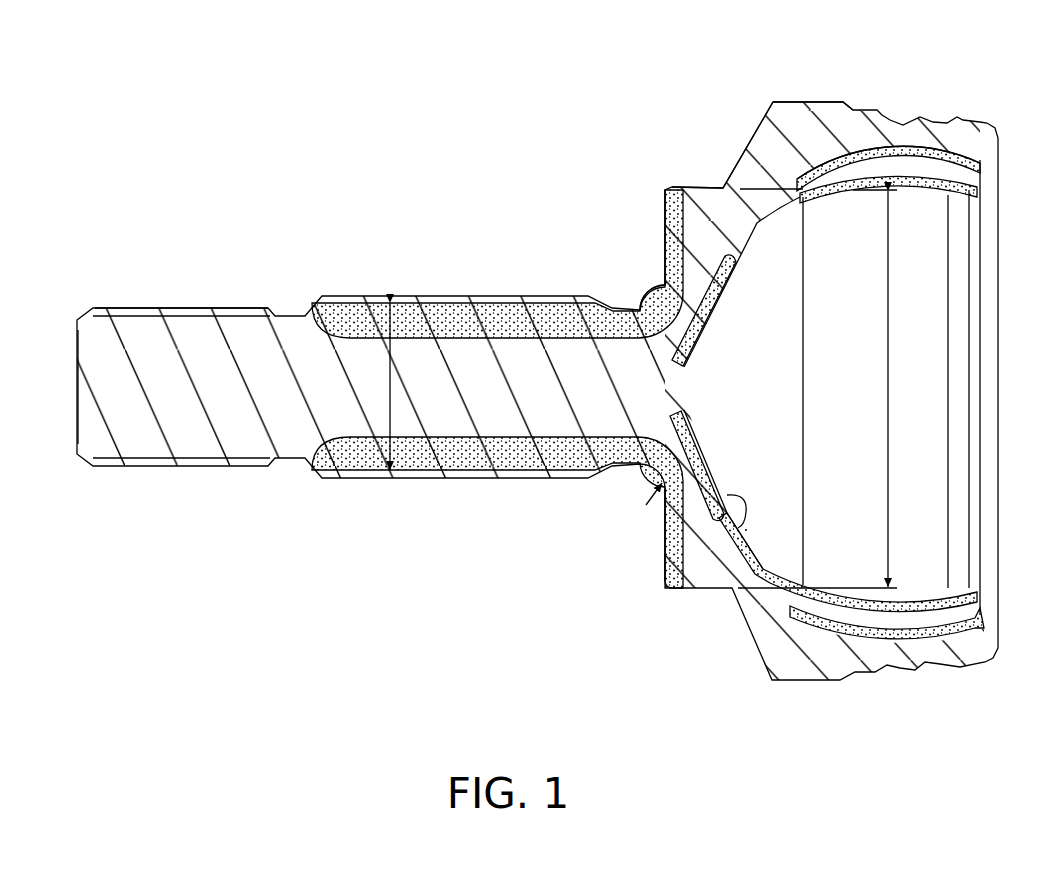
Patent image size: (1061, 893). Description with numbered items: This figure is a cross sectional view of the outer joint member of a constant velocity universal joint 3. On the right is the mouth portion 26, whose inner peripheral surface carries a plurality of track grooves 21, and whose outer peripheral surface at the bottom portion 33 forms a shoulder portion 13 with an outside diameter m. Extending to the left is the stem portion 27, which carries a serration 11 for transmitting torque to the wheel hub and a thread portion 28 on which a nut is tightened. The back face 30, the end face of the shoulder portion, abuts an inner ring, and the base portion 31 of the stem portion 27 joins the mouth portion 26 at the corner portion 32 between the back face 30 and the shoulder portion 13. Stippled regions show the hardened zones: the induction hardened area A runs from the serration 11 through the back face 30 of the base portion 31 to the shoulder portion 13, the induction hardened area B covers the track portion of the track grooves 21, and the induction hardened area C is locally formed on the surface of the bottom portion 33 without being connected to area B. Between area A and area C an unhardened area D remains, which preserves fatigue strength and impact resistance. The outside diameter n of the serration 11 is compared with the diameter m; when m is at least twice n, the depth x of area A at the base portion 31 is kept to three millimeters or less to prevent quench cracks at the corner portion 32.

The constant velocity universal joint 3 is at (596, 548).
The serration 11 is at (445, 307).
The shoulder portion 13 is at (703, 200).
The track groove 21 is at (948, 622).
The mouth portion 26 is at (793, 110).
The stem portion 27 is at (273, 402).
The thread portion 28 is at (192, 307).
The back face 30 is at (660, 560).
The base portion 31 is at (652, 302).
The corner portion 32 is at (668, 205).
The bottom portion 33 is at (713, 310).
The induction hardened area A is at (501, 303).
The induction hardened area B is at (913, 180).
The induction hardened area C is at (747, 530).
The unhardened area D is at (703, 467).
The outside diameter of the serration n is at (398, 386).
The outside diameter of the shoulder portion m is at (897, 389).
The depth of the induction hardened area x is at (645, 503).